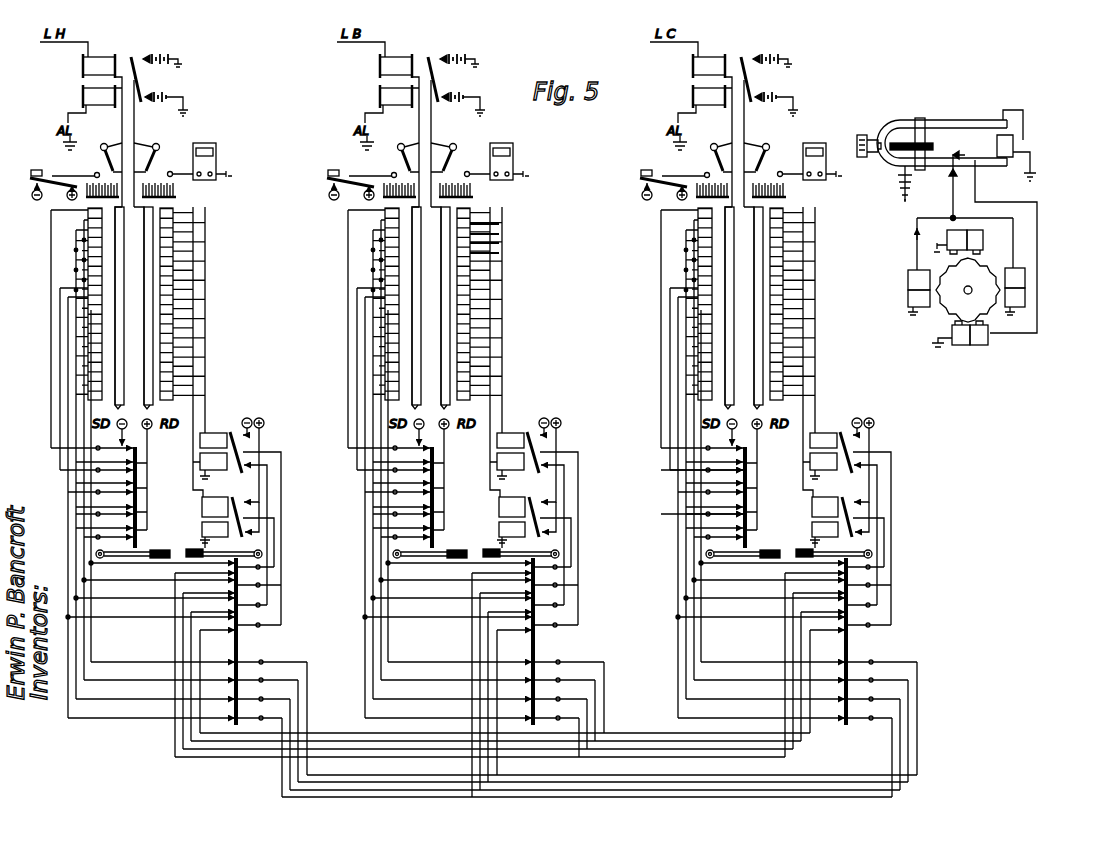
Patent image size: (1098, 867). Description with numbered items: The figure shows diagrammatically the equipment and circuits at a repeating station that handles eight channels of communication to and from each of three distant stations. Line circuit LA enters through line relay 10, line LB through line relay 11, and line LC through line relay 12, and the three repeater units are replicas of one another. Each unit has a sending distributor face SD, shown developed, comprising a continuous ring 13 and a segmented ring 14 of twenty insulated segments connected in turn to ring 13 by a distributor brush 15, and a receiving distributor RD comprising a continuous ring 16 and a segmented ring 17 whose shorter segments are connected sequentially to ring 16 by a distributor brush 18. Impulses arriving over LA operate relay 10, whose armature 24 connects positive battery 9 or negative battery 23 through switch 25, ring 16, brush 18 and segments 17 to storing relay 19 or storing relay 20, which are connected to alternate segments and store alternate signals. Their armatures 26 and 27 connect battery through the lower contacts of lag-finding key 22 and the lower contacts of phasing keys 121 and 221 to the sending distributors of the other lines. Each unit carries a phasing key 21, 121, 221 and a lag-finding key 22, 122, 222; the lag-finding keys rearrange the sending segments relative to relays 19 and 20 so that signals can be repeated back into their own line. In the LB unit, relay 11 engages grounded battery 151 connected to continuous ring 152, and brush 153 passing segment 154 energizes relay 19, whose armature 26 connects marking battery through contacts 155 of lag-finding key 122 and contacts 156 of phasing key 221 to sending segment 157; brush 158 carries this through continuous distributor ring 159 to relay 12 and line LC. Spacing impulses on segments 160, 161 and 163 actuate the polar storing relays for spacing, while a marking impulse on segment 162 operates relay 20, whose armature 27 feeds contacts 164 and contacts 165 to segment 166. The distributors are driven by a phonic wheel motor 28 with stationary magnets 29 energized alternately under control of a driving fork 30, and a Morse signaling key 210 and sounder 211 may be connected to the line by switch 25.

The positive battery 9 is at (160, 60).
The line relay 10 is at (83, 96).
The line relay 11 is at (380, 96).
The line relay 12 is at (693, 96).
The continuous ring 13 is at (115, 337).
The segmented ring 14 is at (102, 327).
The distributor brush 15 is at (90, 198).
The continuous ring 16 is at (150, 244).
The segmented ring 17 is at (160, 280).
The distributor brush 18 is at (176, 196).
The storing relay 19 is at (208, 445).
The storing relay 20 is at (210, 508).
The phasing key 21 is at (144, 553).
The lag-finding key 22 is at (200, 553).
The negative battery 23 is at (158, 104).
The armature 24 is at (146, 92).
The switch 25 is at (102, 158).
The armature 26 is at (244, 442).
The armature 27 is at (244, 505).
The phonic wheel motor 28 is at (968, 290).
The stationary magnets 29 is at (1026, 290).
The driving fork 30 is at (942, 163).
The phasing key 121 is at (437, 552).
The lag-finding key 122 is at (498, 552).
The grounded battery 151 is at (455, 60).
The continuous ring 152 is at (443, 262).
The distributor brush 153 is at (473, 196).
The receiving segment 154 is at (472, 215).
The contacts 155 is at (535, 630).
The contacts 156 is at (700, 450).
The sending segment 157 is at (648, 190).
The distributor brush 158 is at (705, 180).
The continuous distributor ring 159 is at (735, 253).
The receiving segment 160 is at (500, 226).
The receiving segment 161 is at (485, 238).
The receiving segment 162 is at (500, 246).
The receiving segment 163 is at (485, 257).
The contacts 164 is at (520, 612).
The contacts 165 is at (715, 490).
The sending segment 166 is at (698, 232).
The Morse signaling key 210 is at (35, 170).
The sounder 211 is at (216, 158).
The phasing key 221 is at (752, 552).
The lag-finding key 222 is at (808, 550).